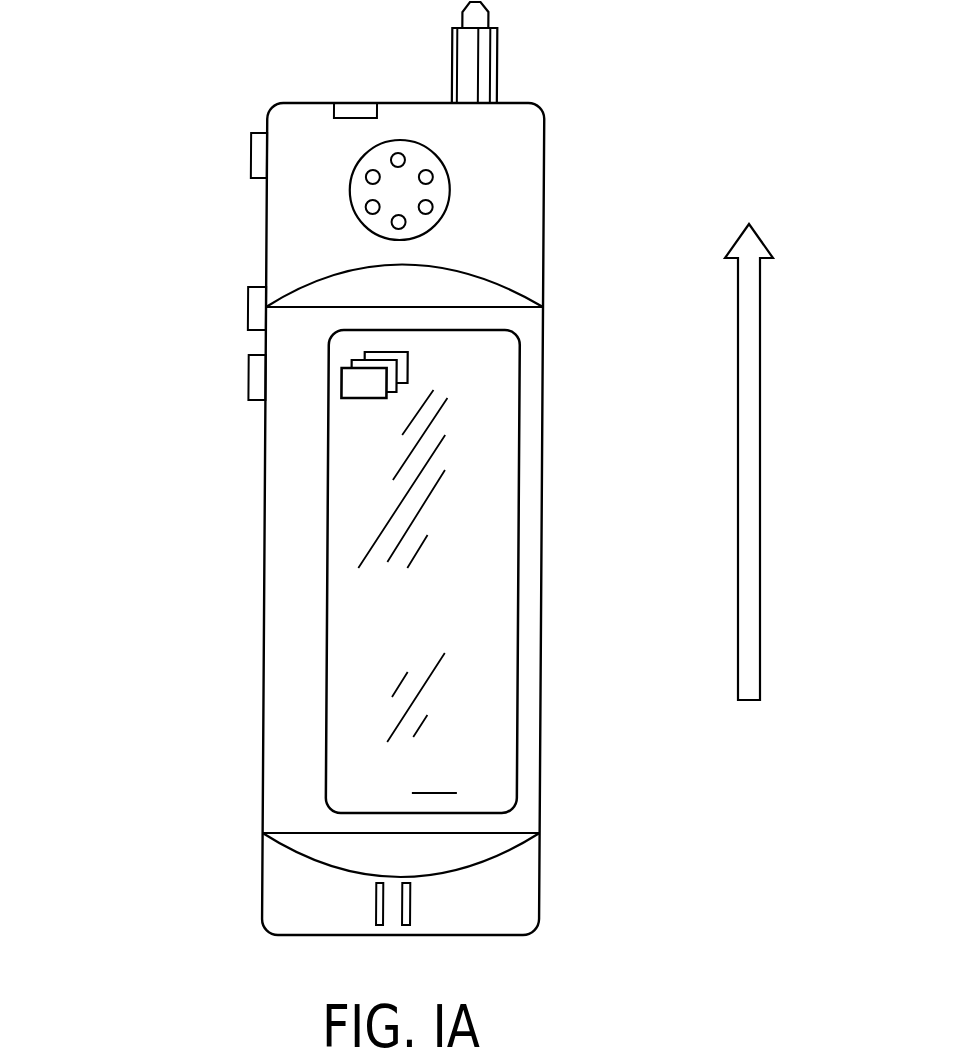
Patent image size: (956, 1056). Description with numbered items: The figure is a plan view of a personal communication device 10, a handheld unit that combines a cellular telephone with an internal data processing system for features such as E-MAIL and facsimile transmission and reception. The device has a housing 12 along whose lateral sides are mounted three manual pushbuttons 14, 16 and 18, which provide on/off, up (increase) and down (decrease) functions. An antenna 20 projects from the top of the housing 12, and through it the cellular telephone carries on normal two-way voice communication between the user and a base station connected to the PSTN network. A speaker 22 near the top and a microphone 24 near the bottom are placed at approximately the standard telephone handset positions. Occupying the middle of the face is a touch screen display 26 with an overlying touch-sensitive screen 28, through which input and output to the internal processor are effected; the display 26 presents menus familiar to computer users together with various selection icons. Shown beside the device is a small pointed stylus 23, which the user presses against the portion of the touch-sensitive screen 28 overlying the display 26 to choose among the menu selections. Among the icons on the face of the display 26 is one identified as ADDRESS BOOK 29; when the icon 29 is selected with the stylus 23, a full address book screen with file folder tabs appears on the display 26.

The personal communication device 10 is at (150, 365).
The housing 12 is at (268, 637).
The pushbutton 14 is at (252, 142).
The pushbutton 16 is at (250, 309).
The pushbutton 18 is at (251, 384).
The antenna 20 is at (499, 62).
The speaker 22 is at (358, 188).
The stylus 23 is at (738, 449).
The microphone 24 is at (390, 913).
The touch screen display 26 is at (522, 623).
The touch-sensitive screen 28 is at (434, 777).
The ADDRESS BOOK icon 29 is at (412, 374).